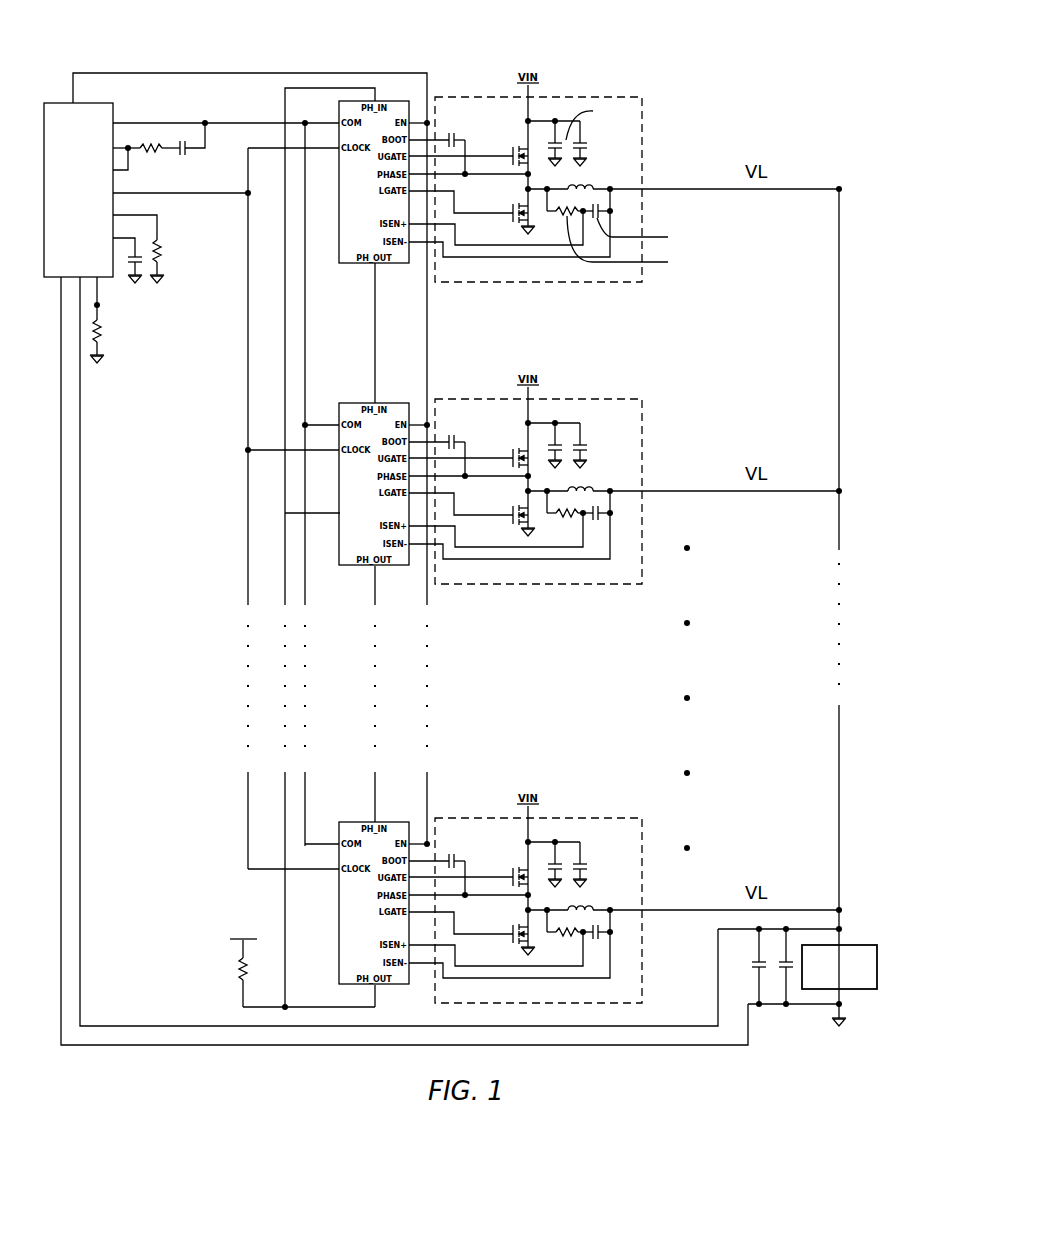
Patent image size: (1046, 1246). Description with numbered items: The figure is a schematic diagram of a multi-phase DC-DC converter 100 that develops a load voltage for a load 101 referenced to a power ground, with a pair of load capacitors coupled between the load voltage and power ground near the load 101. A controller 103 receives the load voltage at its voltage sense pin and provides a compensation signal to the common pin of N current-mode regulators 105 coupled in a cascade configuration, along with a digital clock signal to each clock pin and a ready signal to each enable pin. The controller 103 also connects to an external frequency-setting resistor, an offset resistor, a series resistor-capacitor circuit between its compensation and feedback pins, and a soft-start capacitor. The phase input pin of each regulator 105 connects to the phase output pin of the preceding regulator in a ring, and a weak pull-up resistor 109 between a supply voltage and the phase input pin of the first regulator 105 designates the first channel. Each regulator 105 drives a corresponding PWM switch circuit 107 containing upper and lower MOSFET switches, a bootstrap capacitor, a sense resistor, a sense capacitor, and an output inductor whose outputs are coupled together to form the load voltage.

The multi-phase DC-DC converter 100 is at (760, 68).
The load 101 is at (825, 989).
The controller 103 is at (100, 103).
The regulator 105 is at (393, 101).
The switch circuit 107 is at (597, 97).
The pull-up resistor 109 is at (240, 965).